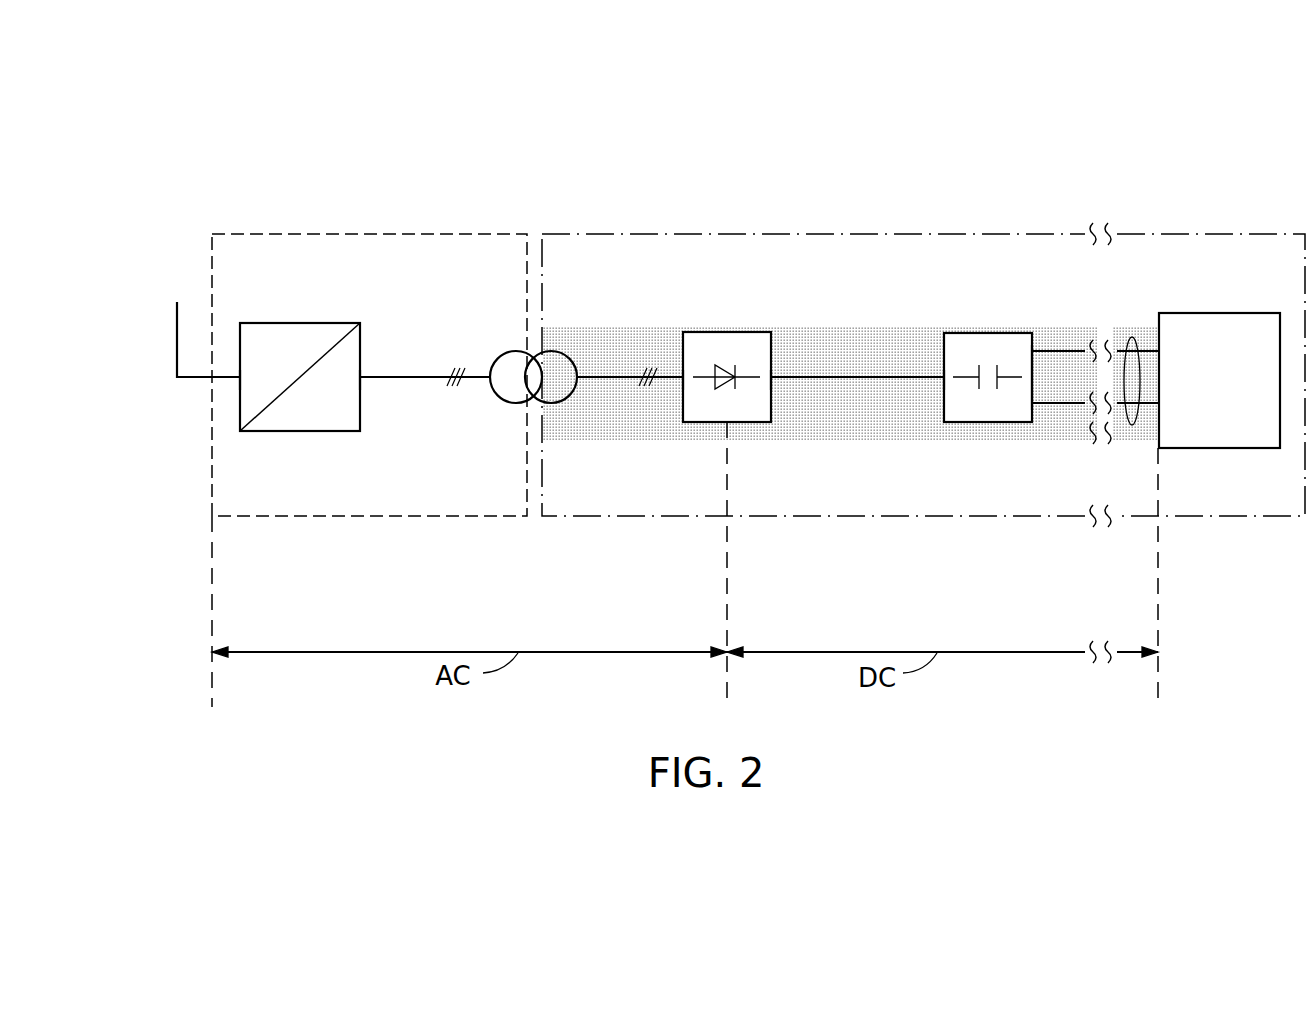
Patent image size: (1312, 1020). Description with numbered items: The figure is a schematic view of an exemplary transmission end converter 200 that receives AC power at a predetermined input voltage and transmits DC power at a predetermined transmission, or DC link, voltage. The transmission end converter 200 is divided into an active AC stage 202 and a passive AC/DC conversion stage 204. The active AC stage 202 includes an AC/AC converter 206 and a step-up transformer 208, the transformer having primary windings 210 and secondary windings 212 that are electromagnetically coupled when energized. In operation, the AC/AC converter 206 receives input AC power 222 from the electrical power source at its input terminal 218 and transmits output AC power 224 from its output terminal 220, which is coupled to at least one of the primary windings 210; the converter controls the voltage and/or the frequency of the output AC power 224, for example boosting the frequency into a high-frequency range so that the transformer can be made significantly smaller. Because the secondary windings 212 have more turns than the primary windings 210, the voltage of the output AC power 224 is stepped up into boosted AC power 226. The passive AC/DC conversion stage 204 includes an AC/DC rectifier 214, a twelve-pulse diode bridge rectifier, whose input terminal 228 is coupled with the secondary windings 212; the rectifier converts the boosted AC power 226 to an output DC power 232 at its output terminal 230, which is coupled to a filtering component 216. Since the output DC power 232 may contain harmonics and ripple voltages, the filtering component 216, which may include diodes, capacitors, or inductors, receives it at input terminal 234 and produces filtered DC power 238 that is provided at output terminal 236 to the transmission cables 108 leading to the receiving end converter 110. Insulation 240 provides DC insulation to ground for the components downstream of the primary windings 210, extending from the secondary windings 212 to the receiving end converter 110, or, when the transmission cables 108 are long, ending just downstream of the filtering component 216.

The transmission end converter 200 is at (975, 120).
The active AC stage 202 is at (532, 552).
The passive AC/DC conversion stage 204 is at (922, 552).
The AC/AC converter 206 is at (302, 323).
The step-up transformer 208 is at (531, 321).
The primary windings 210 is at (512, 352).
The secondary windings 212 is at (555, 350).
The AC/DC rectifier 214 is at (727, 332).
The filtering component 216 is at (987, 333).
The input terminal 218 is at (240, 380).
The output terminal 220 is at (360, 380).
The input AC power 222 is at (176, 325).
The output AC power 224 is at (415, 375).
The boosted AC power 226 is at (603, 378).
The input terminal 228 is at (683, 378).
The output terminal 230 is at (771, 378).
The output DC power 232 is at (835, 376).
The input terminal 234 is at (944, 378).
The output terminal 236 is at (1032, 352).
The filtered DC power 238 is at (1077, 351).
The insulation 240 is at (902, 333).
The transmission cables 108 is at (1130, 425).
The receiving end converter 110 is at (1228, 313).